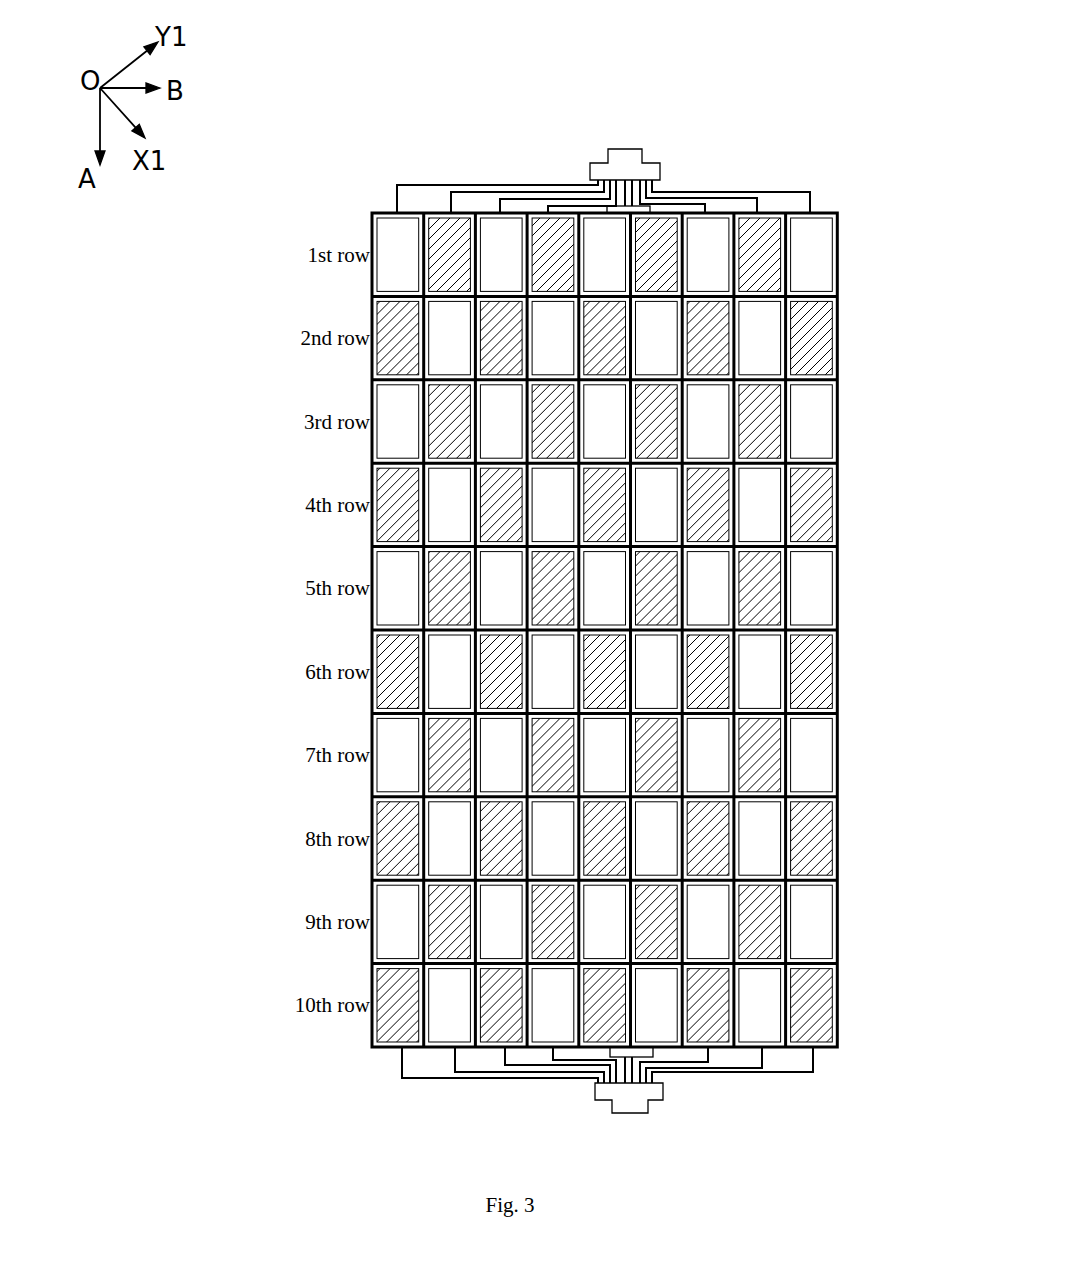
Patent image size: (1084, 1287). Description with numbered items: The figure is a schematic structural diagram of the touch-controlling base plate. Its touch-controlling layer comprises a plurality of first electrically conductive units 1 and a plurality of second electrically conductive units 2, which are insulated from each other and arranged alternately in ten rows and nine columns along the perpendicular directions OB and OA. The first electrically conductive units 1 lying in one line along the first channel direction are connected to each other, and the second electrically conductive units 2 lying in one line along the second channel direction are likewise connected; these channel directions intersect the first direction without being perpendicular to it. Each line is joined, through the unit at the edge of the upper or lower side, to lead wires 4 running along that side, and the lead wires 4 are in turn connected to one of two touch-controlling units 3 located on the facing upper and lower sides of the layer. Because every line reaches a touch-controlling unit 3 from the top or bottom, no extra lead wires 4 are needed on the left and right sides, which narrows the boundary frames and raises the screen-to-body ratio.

The first electrically conductive unit 1 is at (823, 230).
The second electrically conductive unit 2 is at (827, 317).
The touch-controlling unit 3 is at (633, 158).
The lead wires 4 is at (475, 183).